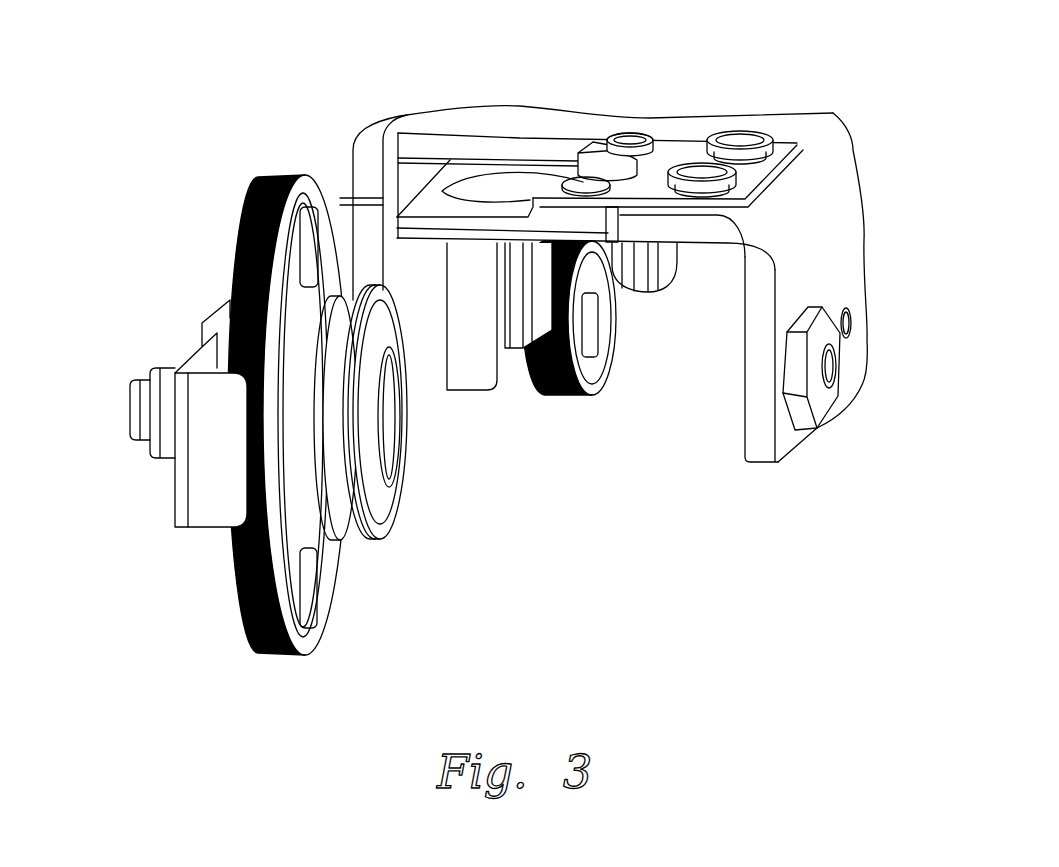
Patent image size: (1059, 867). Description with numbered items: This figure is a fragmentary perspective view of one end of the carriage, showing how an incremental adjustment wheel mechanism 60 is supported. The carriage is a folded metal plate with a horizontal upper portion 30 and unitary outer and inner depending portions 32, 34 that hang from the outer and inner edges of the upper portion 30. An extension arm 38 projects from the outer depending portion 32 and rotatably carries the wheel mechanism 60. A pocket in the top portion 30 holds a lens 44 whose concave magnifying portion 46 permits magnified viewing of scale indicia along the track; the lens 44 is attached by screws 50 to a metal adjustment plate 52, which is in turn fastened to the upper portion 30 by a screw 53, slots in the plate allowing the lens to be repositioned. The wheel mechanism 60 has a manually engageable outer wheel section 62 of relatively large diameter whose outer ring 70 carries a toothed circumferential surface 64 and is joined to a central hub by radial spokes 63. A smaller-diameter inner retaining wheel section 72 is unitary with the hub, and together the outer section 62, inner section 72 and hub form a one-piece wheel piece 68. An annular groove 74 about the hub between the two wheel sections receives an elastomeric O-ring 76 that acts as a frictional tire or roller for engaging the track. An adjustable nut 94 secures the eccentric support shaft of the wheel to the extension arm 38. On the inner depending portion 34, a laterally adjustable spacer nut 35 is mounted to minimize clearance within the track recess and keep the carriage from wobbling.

The horizontal upper portion 30 is at (470, 143).
The outer depending portion 32 is at (418, 383).
The inner depending portion 34 is at (753, 410).
The spacer nut 35 is at (817, 407).
The extension arm 38 is at (173, 500).
The lens 44 is at (552, 158).
The concave magnifying portion 46 is at (497, 190).
The screws 50 is at (631, 134).
The adjustment plate 52 is at (773, 178).
The screw 53 is at (728, 132).
The incremental adjustment wheel mechanism 60 is at (578, 399).
The outer wheel section 62 is at (287, 653).
The radial spokes 63 is at (317, 583).
The toothed circumferential surface 64 is at (236, 593).
The unitary wheel piece 68 is at (330, 555).
The outer ring 70 is at (327, 632).
The inner retaining wheel section 72 is at (390, 507).
The annular groove 74 is at (345, 415).
The O-ring 76 is at (333, 353).
The nut 94 is at (163, 460).